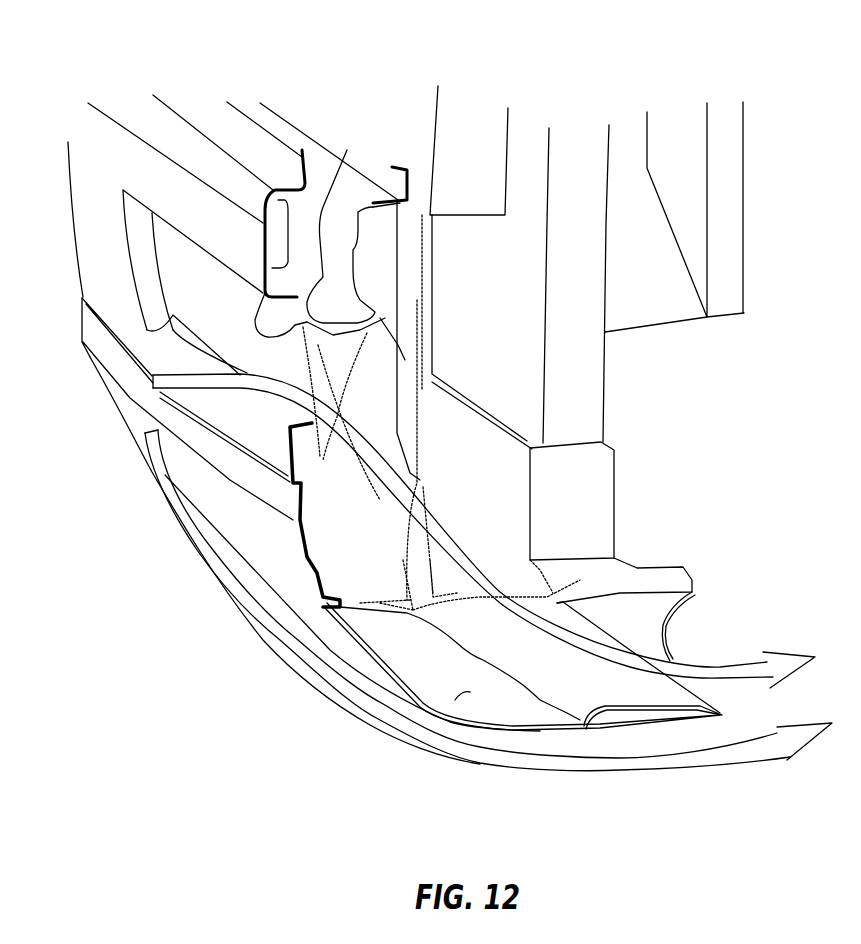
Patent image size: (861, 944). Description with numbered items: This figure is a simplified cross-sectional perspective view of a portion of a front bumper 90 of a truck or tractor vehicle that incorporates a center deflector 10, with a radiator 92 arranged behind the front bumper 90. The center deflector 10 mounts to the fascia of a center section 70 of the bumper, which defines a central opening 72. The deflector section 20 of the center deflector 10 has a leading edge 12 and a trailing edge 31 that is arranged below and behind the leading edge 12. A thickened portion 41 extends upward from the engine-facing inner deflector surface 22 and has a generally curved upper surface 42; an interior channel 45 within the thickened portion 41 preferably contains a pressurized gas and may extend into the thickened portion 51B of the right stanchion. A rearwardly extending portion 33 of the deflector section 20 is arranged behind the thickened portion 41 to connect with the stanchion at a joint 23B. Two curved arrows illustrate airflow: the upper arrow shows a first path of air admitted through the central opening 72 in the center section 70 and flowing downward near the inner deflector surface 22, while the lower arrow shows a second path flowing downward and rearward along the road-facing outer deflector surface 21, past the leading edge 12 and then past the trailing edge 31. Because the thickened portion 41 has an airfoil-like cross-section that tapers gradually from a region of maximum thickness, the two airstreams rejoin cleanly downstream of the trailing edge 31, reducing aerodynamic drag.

The front bumper 90 is at (78, 74).
The center section 70 is at (120, 161).
The central opening 72 is at (182, 279).
The radiator 92 is at (580, 422).
The thickened portion of the stanchion 51B is at (478, 548).
The joint 23B is at (638, 592).
The rearwardly extending portion 33 is at (648, 610).
The trailing edge 31 is at (667, 648).
The leading edge 12 is at (327, 607).
The center deflector 10 is at (380, 695).
The deflector section 20 is at (427, 707).
The outer deflector surface 21 is at (450, 722).
The inner deflector surface 22 is at (470, 692).
The curved upper surface 42 is at (562, 697).
The interior channel 45 is at (605, 718).
The thickened portion 41 is at (638, 733).